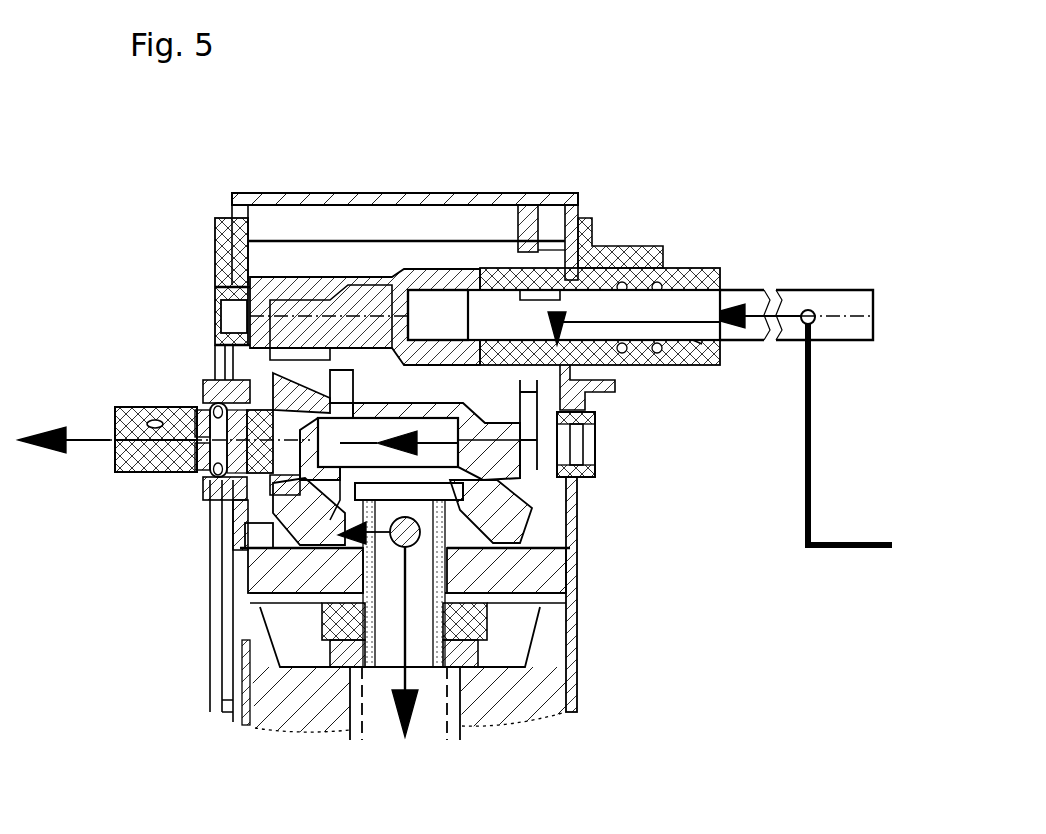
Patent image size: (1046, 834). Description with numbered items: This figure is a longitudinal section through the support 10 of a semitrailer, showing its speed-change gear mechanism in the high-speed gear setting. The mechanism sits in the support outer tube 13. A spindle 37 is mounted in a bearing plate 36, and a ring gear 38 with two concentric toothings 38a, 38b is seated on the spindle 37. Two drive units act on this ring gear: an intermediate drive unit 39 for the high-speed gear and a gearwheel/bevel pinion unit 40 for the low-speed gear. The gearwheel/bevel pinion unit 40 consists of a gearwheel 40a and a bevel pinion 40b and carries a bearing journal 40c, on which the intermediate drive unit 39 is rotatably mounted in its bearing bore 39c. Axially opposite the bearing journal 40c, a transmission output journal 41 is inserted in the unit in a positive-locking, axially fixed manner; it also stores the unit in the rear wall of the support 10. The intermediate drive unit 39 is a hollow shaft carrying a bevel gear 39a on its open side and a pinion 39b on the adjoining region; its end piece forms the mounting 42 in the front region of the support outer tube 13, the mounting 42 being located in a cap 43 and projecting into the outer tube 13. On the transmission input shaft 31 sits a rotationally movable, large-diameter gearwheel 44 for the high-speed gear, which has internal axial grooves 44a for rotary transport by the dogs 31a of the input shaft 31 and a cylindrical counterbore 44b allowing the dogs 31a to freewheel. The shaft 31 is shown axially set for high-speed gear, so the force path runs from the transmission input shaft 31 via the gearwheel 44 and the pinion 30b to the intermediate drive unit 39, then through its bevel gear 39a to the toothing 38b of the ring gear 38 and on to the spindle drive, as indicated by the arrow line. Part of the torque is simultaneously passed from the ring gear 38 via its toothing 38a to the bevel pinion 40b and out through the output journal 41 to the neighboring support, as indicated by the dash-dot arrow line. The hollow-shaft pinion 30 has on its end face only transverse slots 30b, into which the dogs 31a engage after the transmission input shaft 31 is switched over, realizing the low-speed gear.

The support 10 is at (607, 154).
The support outer tube 13 is at (580, 513).
The hollow-shaft pinion 30 is at (510, 262).
The transverse slots 30b is at (560, 240).
The transmission input shaft 31 is at (738, 288).
The dogs 31a is at (660, 250).
The bearing plate 36 is at (575, 623).
The spindle 37 is at (430, 702).
The ring gear 38 is at (565, 545).
The toothing 38a is at (577, 547).
The toothing 38b is at (577, 593).
The intermediate drive unit 39 is at (600, 382).
The bevel gear 39a is at (335, 300).
The pinion 39b is at (565, 526).
The bearing bore 39c is at (310, 505).
The gearwheel/bevel pinion unit 40 is at (320, 345).
The gearwheel 40a is at (330, 433).
The bevel pinion 40b is at (290, 485).
The bearing journal 40c is at (290, 420).
The transmission output journal 41 is at (160, 472).
The mounting 42 is at (619, 440).
The cap 43 is at (590, 488).
The gearwheel 44 is at (580, 205).
The axial grooves 44a is at (600, 247).
The cylindrical counterbore 44b is at (597, 227).